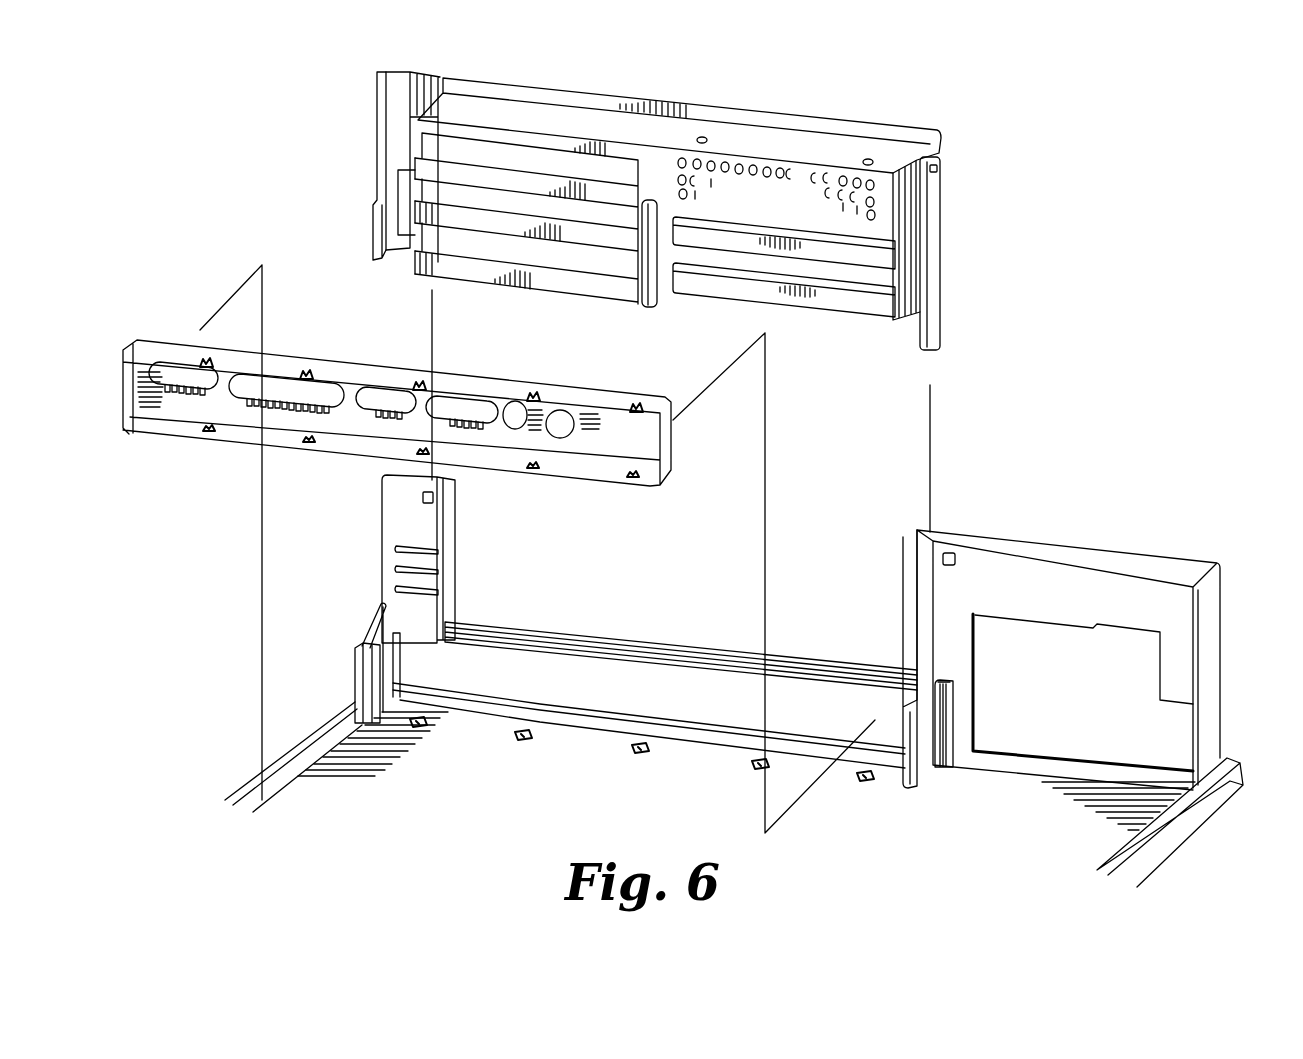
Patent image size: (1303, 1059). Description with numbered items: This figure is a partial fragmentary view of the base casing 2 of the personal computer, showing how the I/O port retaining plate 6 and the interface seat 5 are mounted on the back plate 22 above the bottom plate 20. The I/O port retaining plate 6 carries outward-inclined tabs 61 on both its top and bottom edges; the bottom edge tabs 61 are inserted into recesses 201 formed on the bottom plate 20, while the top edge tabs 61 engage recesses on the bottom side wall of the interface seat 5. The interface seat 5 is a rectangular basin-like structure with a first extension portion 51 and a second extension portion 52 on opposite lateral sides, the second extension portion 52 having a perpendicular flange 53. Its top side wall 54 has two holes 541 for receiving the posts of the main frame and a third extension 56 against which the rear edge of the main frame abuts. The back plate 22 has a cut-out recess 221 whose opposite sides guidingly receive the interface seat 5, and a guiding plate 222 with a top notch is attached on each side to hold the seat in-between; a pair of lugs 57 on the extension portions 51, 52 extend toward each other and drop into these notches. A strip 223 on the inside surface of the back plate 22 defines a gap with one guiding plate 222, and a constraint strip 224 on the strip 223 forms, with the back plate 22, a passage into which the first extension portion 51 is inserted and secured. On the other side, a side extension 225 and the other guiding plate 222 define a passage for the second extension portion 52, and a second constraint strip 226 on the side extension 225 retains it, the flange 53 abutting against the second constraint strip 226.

The base casing 2 is at (1218, 819).
The interface seat 5 is at (658, 206).
The I/O port retaining plate 6 is at (397, 408).
The bottom plate 20 is at (343, 768).
The back plate 22 is at (1068, 627).
The first extension portion 51 is at (933, 242).
The second extension portion 52 is at (395, 136).
The perpendicular flange 53 is at (377, 106).
The top side wall 54 is at (598, 116).
The third extension 56 is at (832, 117).
The lugs 57 is at (926, 184).
The outward-inclined tabs 61 is at (306, 372).
The recesses 201 is at (518, 740).
The cut-out recess 221 is at (688, 636).
The guiding plates 222 is at (455, 503).
The strip 223 is at (955, 714).
The constraint strip 224 is at (948, 673).
The side extension 225 is at (378, 622).
The second constraint strip 226 is at (360, 648).
The holes 541 is at (708, 136).